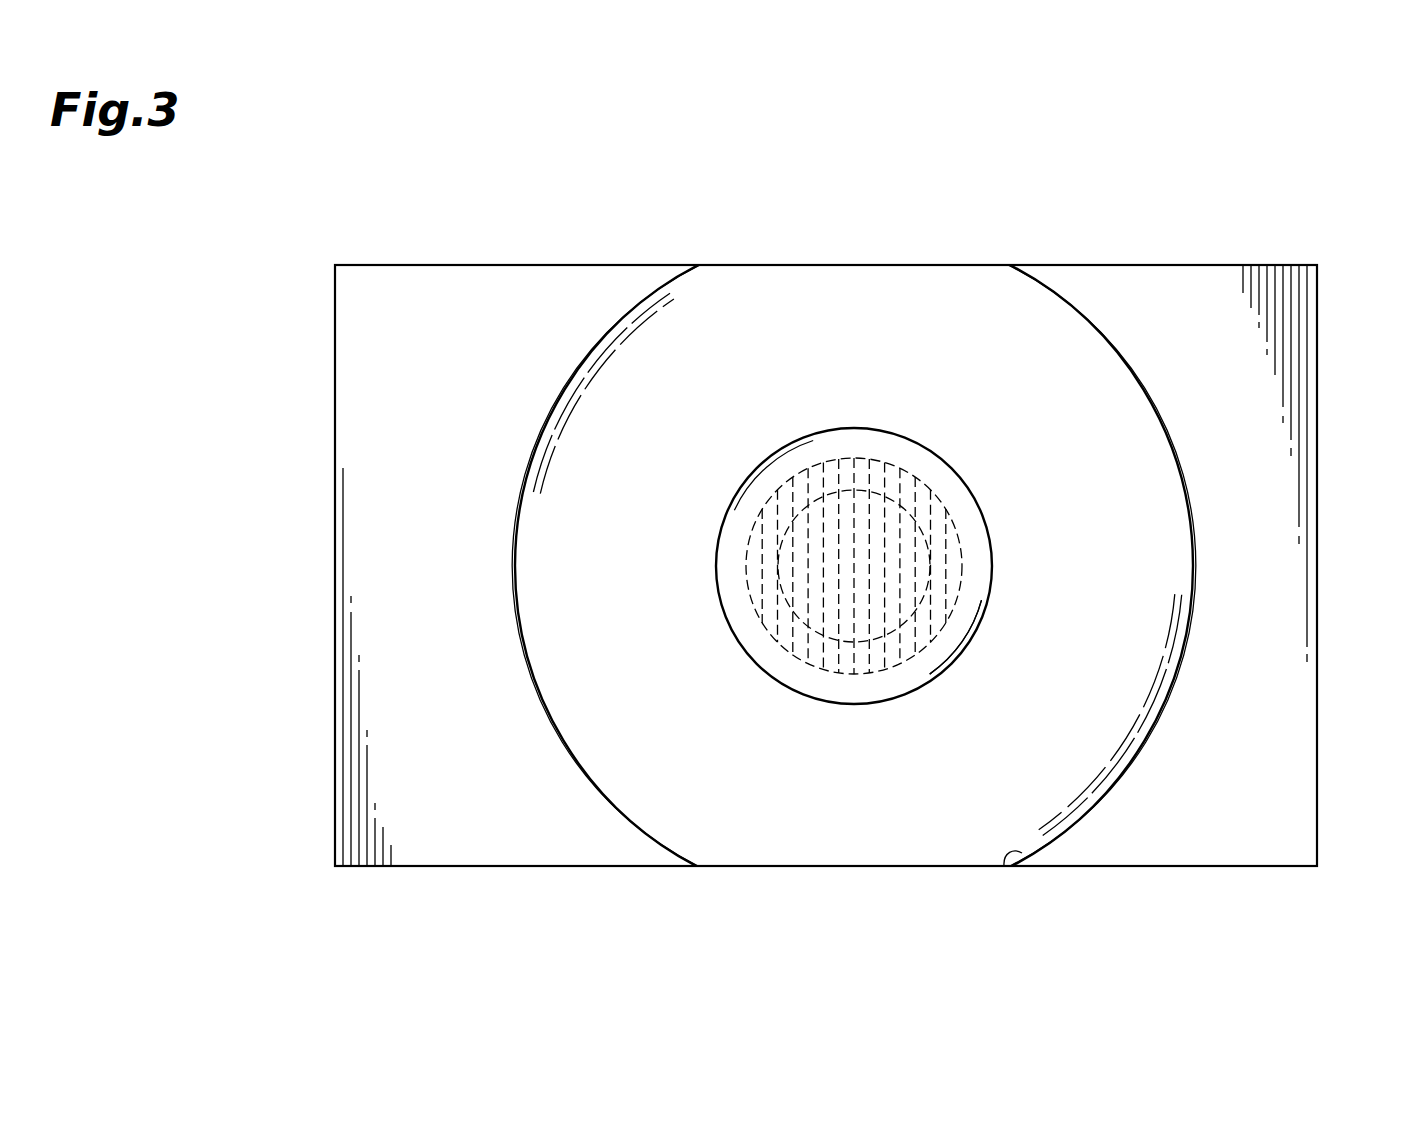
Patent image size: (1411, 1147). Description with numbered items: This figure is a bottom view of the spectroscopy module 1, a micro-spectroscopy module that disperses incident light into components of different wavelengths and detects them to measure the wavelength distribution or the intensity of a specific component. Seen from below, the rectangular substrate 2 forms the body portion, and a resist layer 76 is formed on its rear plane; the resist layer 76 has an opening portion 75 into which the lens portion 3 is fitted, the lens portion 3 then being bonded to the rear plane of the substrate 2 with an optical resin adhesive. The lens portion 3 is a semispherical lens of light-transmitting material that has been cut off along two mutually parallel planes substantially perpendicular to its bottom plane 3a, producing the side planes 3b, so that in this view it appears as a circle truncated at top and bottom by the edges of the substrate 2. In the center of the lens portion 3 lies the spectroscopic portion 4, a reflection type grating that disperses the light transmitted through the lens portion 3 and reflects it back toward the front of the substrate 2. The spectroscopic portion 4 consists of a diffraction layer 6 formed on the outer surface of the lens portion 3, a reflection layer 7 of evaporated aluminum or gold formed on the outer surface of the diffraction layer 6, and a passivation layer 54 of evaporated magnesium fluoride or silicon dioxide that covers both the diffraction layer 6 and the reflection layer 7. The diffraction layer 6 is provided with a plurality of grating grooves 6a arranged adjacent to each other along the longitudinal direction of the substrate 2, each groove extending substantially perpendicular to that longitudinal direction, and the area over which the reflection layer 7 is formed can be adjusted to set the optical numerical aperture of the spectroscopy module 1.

The spectroscopy module 1 is at (1172, 222).
The substrate 2 is at (1318, 785).
The lens portion 3 is at (610, 374).
The bottom plane 3a is at (735, 832).
The side planes 3b is at (853, 265).
The spectroscopic portion 4 is at (760, 675).
The diffraction layer 6 is at (920, 482).
The grating grooves 6a is at (823, 481).
The reflection layer 7 is at (920, 600).
The passivation layer 54 is at (977, 552).
The opening portion 75 is at (1004, 866).
The resist layer 76 is at (1213, 840).